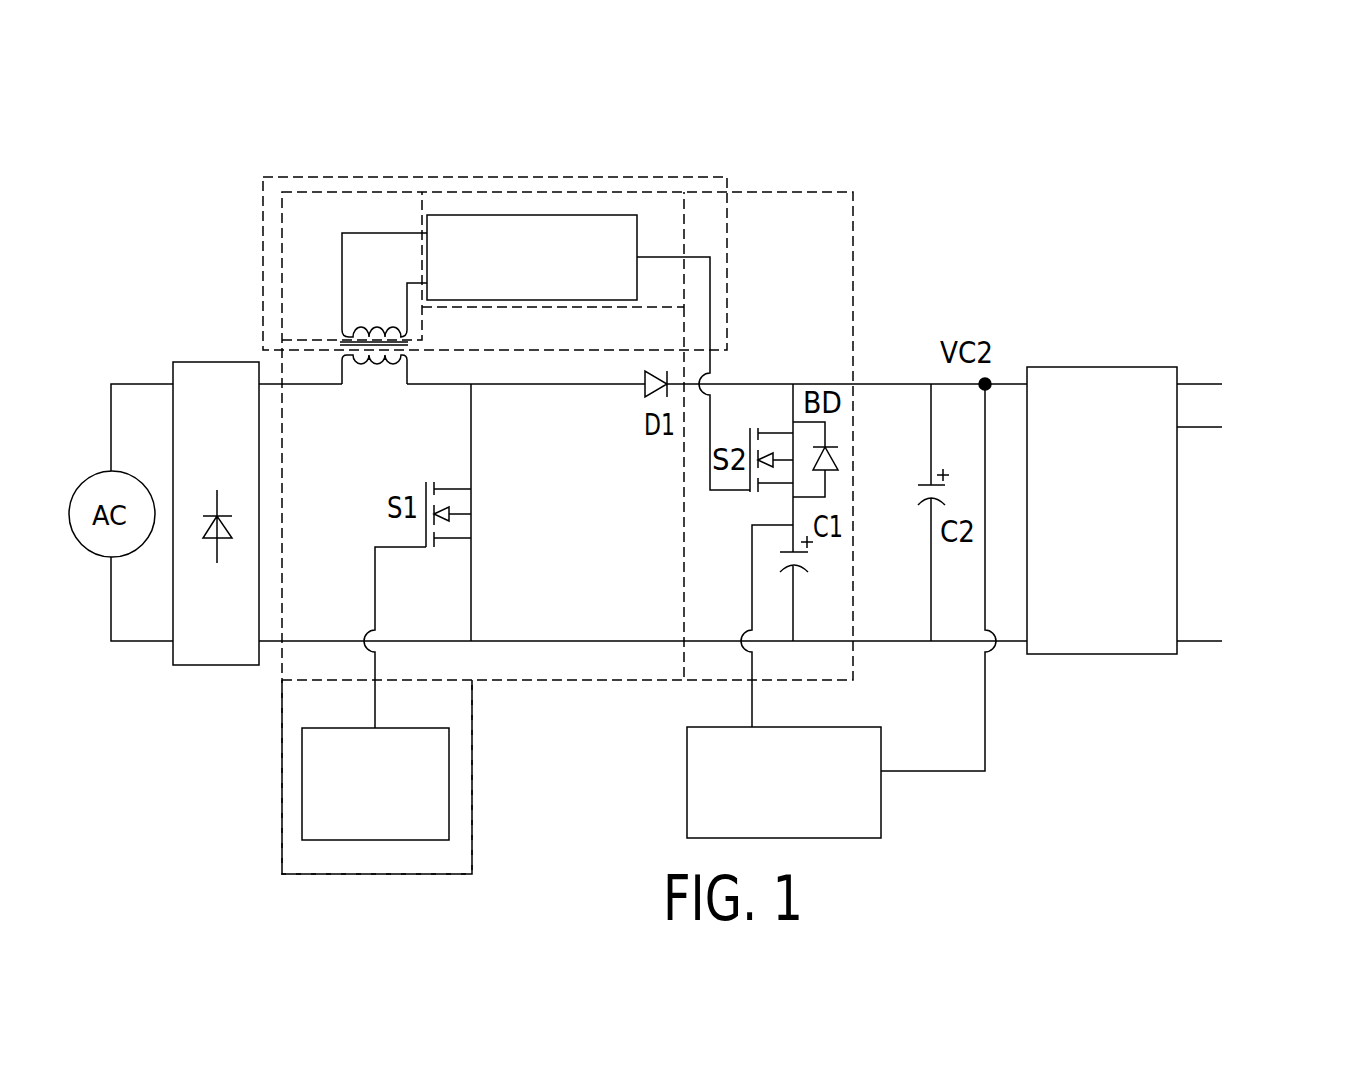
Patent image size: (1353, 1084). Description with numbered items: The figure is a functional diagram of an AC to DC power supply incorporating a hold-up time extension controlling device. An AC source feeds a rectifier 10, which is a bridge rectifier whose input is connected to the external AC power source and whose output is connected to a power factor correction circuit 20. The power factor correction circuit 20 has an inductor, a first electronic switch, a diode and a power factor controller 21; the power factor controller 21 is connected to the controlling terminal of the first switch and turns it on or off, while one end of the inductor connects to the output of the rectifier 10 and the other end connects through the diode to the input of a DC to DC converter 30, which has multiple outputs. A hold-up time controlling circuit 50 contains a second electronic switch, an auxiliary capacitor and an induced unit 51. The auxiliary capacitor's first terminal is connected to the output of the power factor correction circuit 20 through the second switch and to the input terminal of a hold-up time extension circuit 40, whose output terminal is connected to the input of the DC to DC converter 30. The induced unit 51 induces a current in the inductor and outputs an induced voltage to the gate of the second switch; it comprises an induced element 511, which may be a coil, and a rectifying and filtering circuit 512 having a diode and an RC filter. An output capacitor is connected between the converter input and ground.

The rectifier 10 is at (222, 372).
The power factor correction circuit 20 is at (290, 808).
The power factor controller 21 is at (362, 730).
The DC to DC converter 30 is at (1080, 383).
The hold-up time extension circuit 40 is at (868, 806).
The hold-up time controlling circuit 50 is at (855, 314).
The induced unit 51 is at (495, 177).
The induced element 511 is at (378, 192).
The rectifying and filtering circuit 512 is at (612, 218).